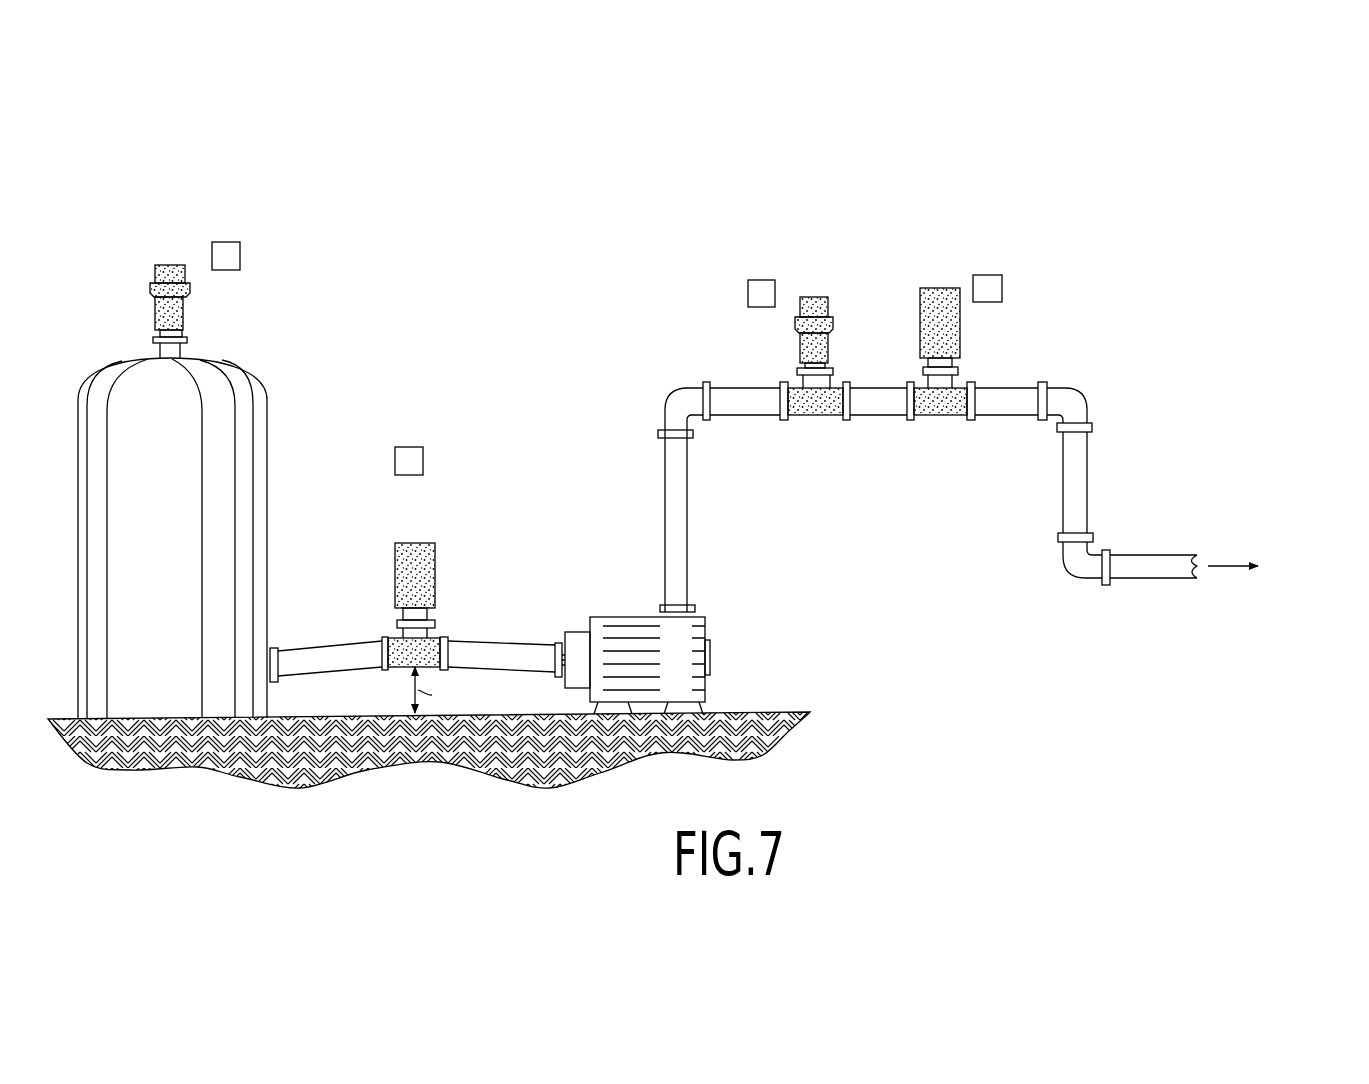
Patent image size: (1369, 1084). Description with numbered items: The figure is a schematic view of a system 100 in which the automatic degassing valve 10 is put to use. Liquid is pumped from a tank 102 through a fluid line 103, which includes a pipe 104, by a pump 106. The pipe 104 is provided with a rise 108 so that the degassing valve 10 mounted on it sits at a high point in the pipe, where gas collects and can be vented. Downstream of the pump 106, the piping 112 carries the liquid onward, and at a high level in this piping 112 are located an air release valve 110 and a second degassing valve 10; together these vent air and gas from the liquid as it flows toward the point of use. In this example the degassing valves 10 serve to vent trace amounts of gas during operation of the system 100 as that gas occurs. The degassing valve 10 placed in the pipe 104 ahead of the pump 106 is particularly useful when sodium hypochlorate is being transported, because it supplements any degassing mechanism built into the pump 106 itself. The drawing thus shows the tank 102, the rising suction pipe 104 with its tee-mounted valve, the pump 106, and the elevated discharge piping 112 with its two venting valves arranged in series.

The system 100 is at (590, 380).
The tank 102 is at (184, 537).
The degassing valve 10 is at (442, 555).
The pipe 104 is at (490, 652).
The pump 106 is at (685, 633).
The rise 108 is at (398, 671).
The air release valve 110 is at (818, 300).
The fluid line 103 is at (862, 419).
The piping 112 is at (1005, 400).